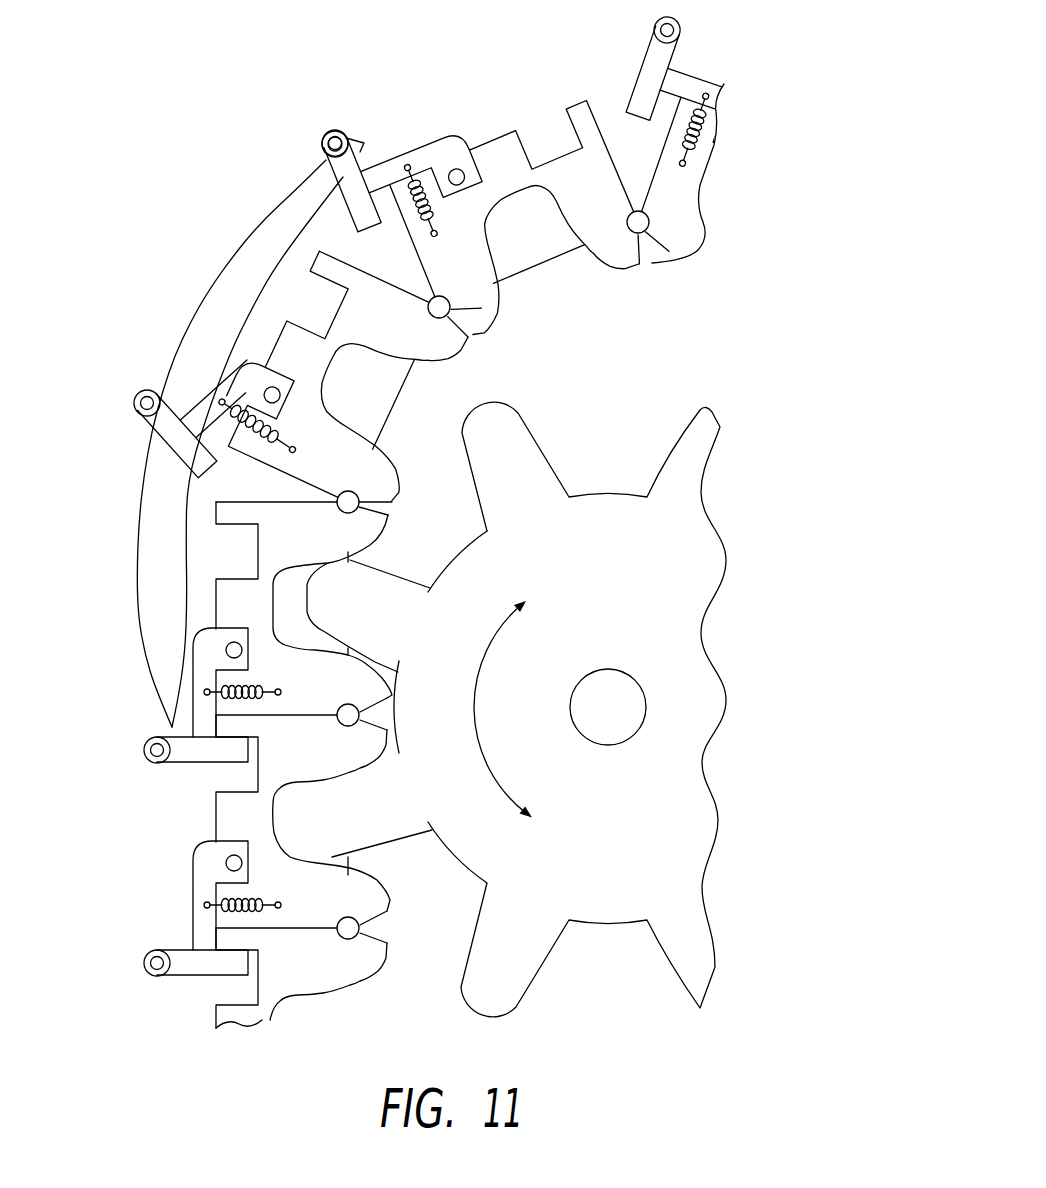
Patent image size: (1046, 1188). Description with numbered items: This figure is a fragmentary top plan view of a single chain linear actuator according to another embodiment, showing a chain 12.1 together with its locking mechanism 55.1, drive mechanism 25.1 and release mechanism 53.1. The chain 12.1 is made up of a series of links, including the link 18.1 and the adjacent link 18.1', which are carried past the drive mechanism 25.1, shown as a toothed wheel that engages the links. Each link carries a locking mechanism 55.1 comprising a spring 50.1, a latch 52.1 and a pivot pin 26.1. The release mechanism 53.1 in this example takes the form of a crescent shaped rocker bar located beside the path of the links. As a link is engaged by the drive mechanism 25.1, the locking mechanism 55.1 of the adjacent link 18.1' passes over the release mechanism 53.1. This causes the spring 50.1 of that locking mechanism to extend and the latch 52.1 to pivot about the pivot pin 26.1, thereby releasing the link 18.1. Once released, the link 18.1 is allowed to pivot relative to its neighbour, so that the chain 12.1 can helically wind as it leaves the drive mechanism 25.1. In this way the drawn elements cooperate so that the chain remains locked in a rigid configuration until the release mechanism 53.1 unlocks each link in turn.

The chain 12.1 is at (540, 343).
The link 18.1 is at (222, 759).
The adjacent link 18.1' is at (475, 257).
The drive mechanism 25.1 is at (743, 551).
The pivot pin 26.1 is at (282, 367).
The spring 50.1 is at (185, 440).
The latch 52.1 is at (192, 472).
The release mechanism 53.1 is at (160, 525).
The locking mechanism 55.1 is at (148, 378).